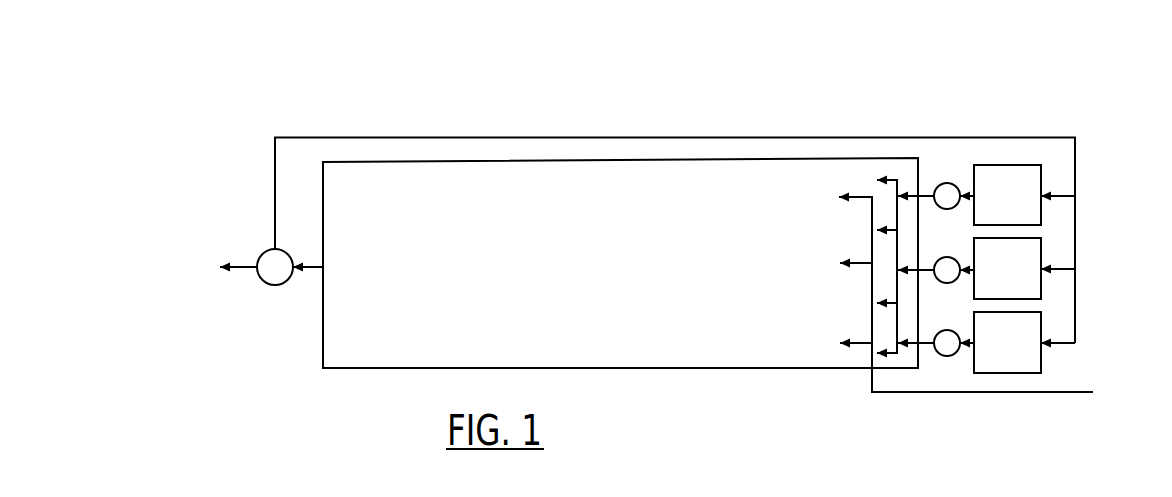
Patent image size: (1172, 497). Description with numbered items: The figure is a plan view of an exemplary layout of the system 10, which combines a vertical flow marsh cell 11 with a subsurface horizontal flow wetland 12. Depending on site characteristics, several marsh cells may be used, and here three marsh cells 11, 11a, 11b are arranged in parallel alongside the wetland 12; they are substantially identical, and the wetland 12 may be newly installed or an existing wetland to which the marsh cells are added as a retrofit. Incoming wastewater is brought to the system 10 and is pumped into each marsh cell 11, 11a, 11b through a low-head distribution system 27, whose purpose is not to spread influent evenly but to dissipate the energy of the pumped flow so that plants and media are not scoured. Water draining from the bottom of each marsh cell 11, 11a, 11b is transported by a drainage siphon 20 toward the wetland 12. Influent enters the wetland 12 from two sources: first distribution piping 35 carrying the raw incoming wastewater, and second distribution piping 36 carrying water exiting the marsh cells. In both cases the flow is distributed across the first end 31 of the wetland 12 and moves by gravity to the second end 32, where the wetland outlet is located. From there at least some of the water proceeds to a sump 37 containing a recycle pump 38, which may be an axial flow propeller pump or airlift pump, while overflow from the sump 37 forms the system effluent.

The system 10 is at (953, 73).
The vertical flow marsh cell 11 is at (1007, 163).
The marsh cell 11a is at (1027, 257).
The marsh cell 11b is at (1027, 335).
The subsurface horizontal flow wetland 12 is at (558, 276).
The drainage siphon 20 is at (943, 183).
The low-head distribution system 27 is at (1059, 272).
The first end 31 is at (919, 314).
The second end 32 is at (323, 350).
The first distribution piping 35 is at (843, 260).
The second distribution piping 36 is at (883, 268).
The sump 37 is at (272, 248).
The recycle pump 38 is at (279, 283).